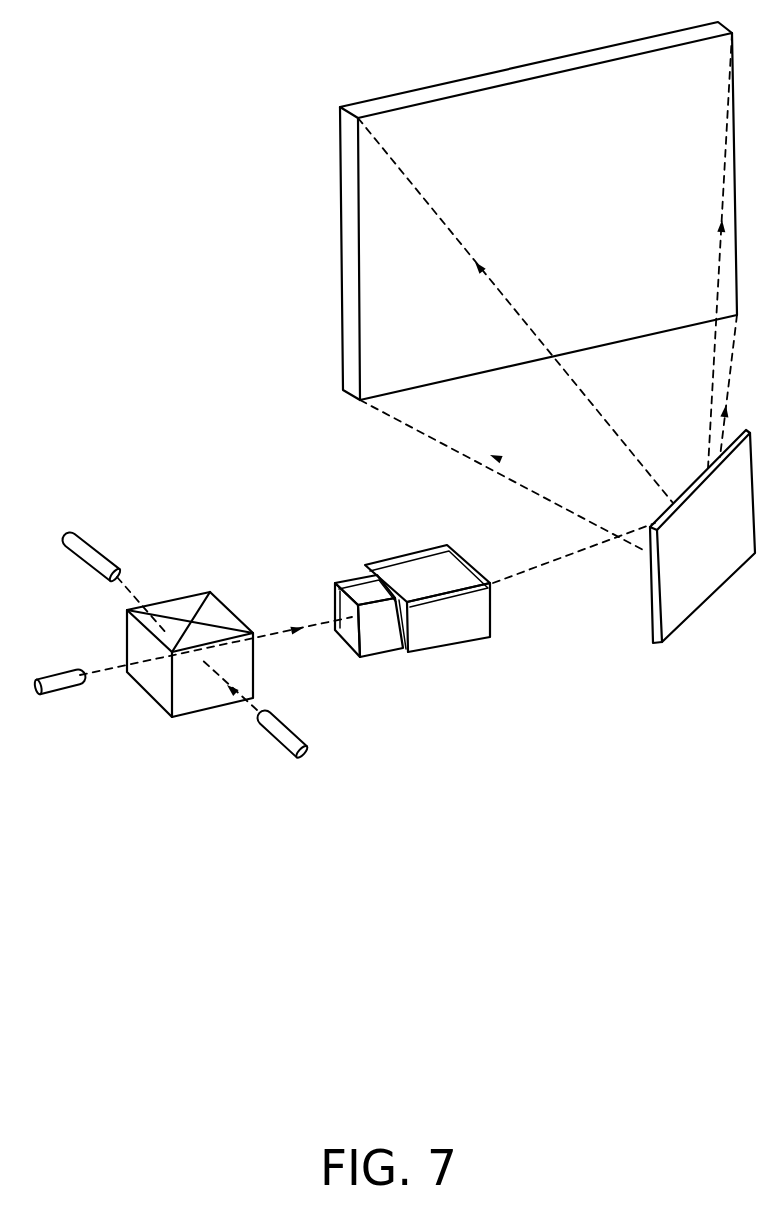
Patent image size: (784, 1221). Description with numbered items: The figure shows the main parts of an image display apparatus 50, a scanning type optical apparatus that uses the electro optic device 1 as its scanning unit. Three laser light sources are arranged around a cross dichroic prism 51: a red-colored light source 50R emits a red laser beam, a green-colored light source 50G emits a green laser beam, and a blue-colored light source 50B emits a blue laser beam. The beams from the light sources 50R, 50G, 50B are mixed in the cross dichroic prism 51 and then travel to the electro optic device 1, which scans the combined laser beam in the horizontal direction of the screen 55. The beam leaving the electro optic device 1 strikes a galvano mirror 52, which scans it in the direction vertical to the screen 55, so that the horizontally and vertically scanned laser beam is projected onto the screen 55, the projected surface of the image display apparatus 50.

The image display apparatus 50 is at (92, 160).
The screen 55 is at (342, 252).
The galvano mirror 52 is at (710, 598).
The electro optic device 1 is at (452, 669).
The cross dichroic prism 51 is at (197, 588).
The red-colored light source 50R is at (75, 538).
The green-colored light source 50G is at (68, 693).
The blue-colored light source 50B is at (268, 740).